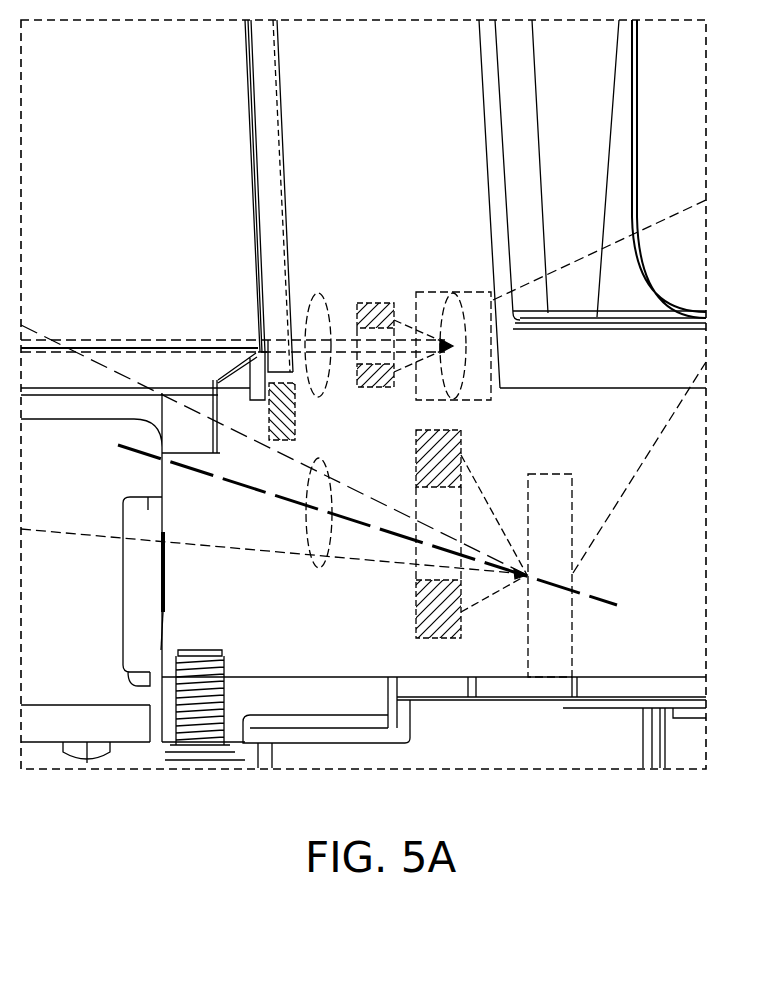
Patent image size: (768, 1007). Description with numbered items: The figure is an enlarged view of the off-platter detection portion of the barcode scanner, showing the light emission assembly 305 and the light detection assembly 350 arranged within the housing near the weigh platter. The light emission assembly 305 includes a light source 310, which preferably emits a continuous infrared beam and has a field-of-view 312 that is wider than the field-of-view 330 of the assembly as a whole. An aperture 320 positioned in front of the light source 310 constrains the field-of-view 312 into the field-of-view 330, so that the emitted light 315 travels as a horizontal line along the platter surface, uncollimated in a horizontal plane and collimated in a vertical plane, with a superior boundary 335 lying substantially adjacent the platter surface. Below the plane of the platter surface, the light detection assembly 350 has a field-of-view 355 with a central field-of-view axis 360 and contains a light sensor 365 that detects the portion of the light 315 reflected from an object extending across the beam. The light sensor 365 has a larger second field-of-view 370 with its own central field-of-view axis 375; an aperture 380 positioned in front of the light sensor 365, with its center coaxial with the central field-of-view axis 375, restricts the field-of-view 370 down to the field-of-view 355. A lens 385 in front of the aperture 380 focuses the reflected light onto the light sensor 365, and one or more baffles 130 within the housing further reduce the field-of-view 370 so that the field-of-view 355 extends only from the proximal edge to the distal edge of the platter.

The light emission assembly 305 is at (383, 156).
The light source 310 is at (469, 290).
The field-of-view 312 is at (394, 318).
The aperture 320 is at (357, 338).
The light 315 is at (193, 338).
The field-of-view 330 is at (97, 340).
The superior boundary 335 is at (58, 376).
The baffles 130 is at (293, 427).
The lens 385 is at (305, 517).
The field-of-view 355 is at (233, 549).
The aperture 380 is at (435, 580).
The light detection assembly 350 is at (338, 626).
The central field-of-view axis 360 is at (423, 525).
The central field-of-view axis 375 is at (588, 592).
The light sensor 365 is at (573, 633).
The field-of-view 370 is at (485, 598).